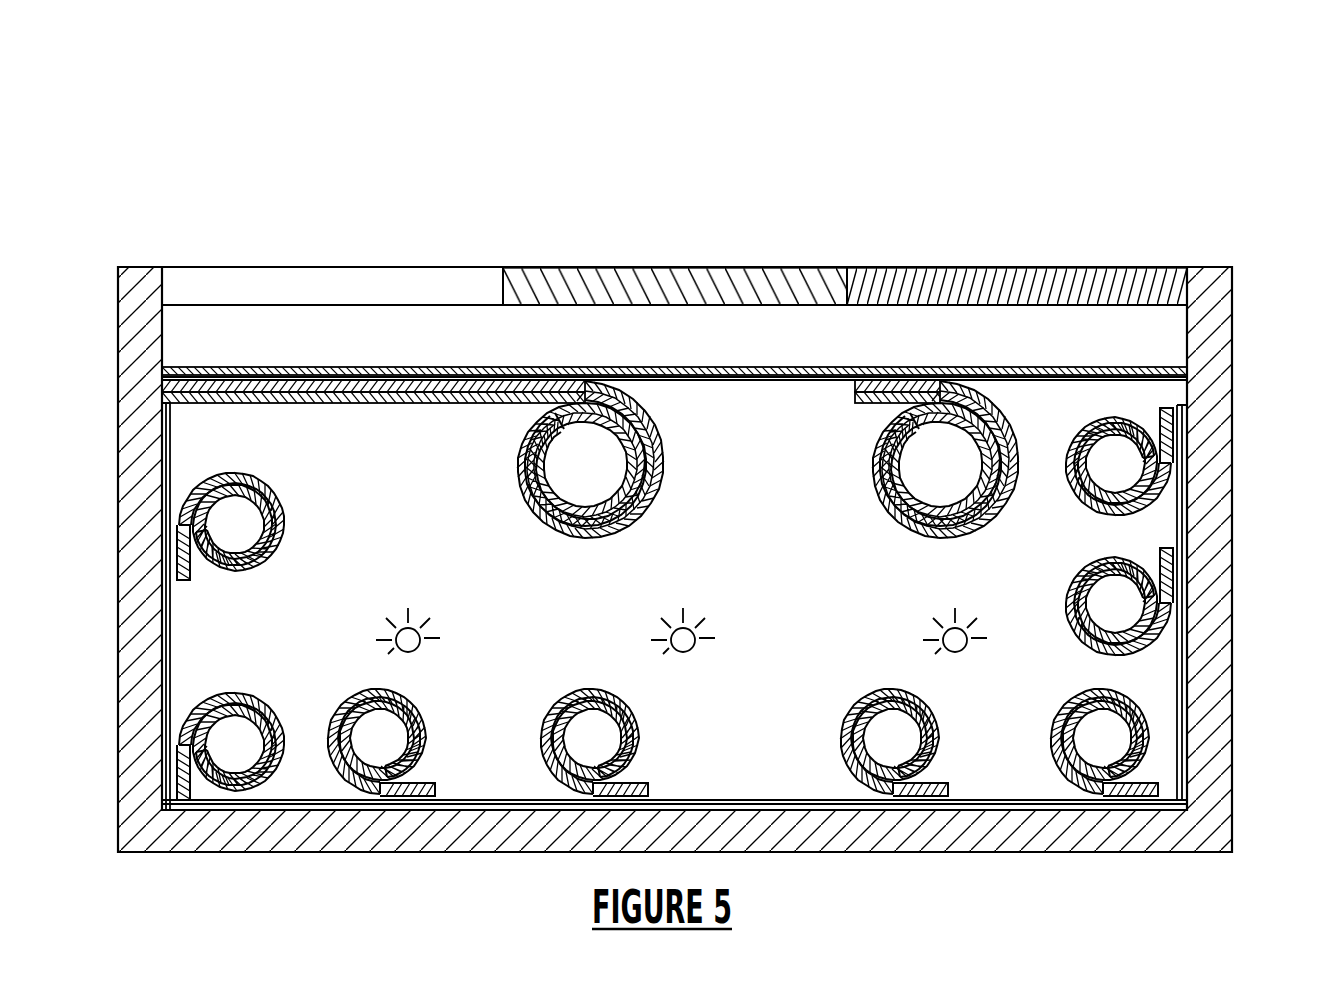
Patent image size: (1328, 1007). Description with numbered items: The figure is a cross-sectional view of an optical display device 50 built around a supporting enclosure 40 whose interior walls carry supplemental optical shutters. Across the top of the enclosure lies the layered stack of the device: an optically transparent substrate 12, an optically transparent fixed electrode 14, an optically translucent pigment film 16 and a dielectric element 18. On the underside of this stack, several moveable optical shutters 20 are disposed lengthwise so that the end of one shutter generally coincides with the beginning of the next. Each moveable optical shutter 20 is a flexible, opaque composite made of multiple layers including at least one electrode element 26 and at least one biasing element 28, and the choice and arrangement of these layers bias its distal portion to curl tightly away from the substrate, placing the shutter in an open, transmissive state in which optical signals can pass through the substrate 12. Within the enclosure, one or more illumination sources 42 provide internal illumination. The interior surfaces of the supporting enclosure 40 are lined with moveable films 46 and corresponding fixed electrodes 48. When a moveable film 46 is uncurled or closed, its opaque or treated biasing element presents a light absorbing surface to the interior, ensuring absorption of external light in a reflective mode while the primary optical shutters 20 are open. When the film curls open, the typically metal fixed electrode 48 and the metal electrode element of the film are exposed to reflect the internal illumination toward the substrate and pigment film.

The optically transparent substrate 12 is at (1145, 325).
The optically transparent fixed electrode 14 is at (1185, 370).
The optically translucent pigment film 16 is at (463, 285).
The dielectric element 18 is at (1185, 378).
The moveable optical shutter 20 is at (358, 416).
The electrode element 26 is at (185, 385).
The biasing element 28 is at (185, 398).
The supporting enclosure 40 is at (910, 835).
The illumination source 42 is at (424, 648).
The moveable film 46 is at (256, 562).
The fixed electrode 48 is at (173, 633).
The optical display device 50 is at (336, 213).